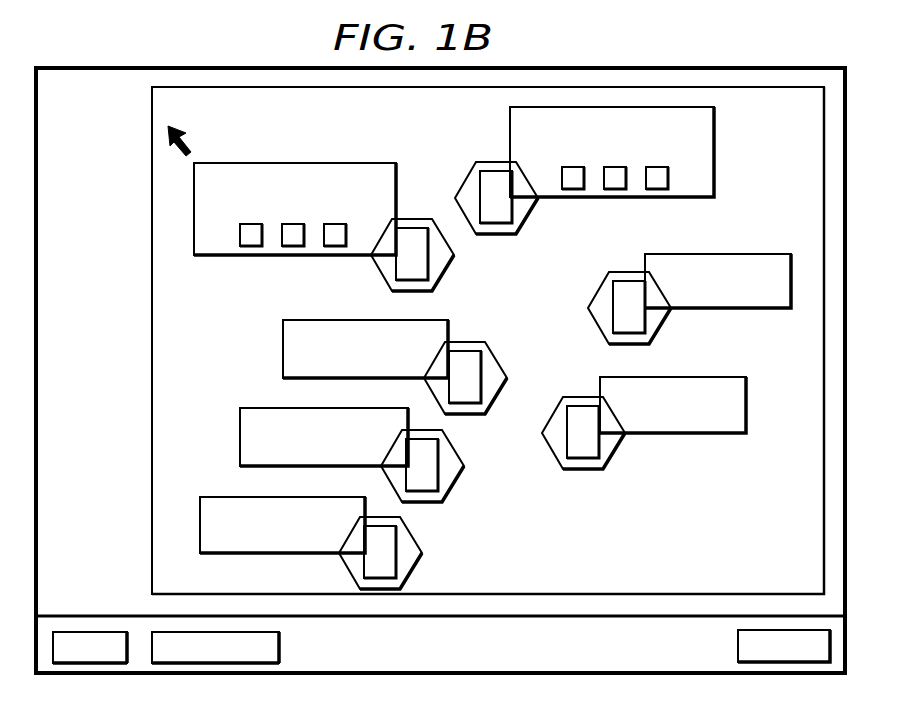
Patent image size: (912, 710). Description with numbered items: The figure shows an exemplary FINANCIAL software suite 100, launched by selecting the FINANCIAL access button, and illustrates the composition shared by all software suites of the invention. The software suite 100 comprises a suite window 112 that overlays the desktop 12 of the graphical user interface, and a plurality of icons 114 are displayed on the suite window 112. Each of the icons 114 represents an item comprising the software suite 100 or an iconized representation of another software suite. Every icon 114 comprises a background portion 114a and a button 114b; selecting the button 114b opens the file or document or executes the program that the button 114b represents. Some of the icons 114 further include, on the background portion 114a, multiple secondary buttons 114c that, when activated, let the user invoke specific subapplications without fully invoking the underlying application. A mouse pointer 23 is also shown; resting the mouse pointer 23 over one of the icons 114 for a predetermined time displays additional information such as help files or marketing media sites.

The desktop 12 is at (68, 78).
The mouse pointer 23 is at (176, 127).
The FINANCIAL software suite 100 is at (601, 601).
The suite window 112 is at (677, 582).
The icons 114 is at (455, 342).
The background portion 114a is at (302, 162).
The button 114b is at (456, 256).
The secondary buttons 114c is at (251, 246).